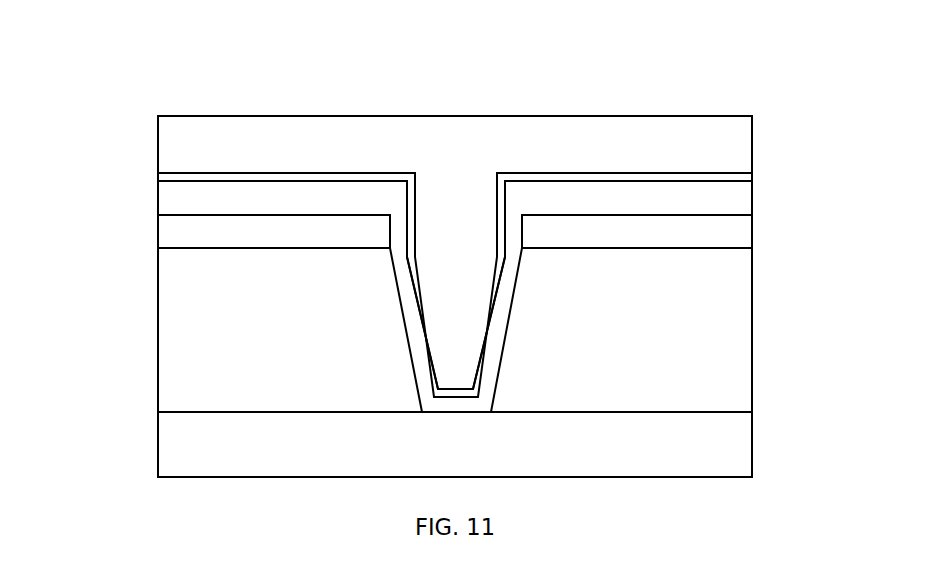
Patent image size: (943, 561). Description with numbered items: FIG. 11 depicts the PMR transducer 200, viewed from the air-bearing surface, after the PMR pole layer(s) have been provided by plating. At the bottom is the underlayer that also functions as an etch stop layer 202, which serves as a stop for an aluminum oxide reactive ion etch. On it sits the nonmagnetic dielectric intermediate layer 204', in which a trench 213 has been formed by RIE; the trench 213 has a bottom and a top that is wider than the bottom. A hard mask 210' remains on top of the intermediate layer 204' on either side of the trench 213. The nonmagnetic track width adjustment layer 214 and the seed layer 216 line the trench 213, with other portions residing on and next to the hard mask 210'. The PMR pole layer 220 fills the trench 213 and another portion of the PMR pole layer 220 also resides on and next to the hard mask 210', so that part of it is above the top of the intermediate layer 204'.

The PMR transducer 200 is at (476, 46).
The etch stop layer 202 is at (753, 432).
The intermediate layer 204' is at (455, 330).
The hard mask 210' is at (455, 217).
The trench 213 is at (441, 212).
The nonmagnetic layer 214 is at (752, 189).
The seed layer 216 is at (522, 174).
The PMR pole layer 220 is at (223, 116).